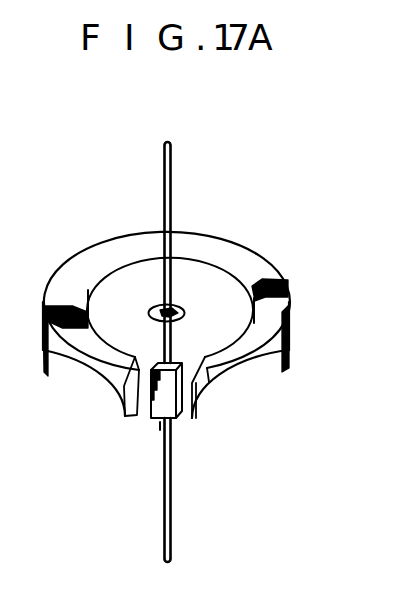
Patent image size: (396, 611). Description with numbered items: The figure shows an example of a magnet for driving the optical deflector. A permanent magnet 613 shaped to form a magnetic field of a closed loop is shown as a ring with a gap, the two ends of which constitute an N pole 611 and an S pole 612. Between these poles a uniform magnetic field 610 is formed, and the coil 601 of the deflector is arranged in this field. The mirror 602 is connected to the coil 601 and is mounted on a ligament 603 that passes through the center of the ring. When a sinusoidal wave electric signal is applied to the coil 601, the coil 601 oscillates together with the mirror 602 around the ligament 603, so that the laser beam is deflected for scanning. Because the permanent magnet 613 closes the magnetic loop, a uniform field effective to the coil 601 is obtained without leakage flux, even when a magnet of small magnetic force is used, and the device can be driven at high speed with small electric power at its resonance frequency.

The coil 601 is at (174, 420).
The mirror 602 is at (157, 305).
The ligament 603 is at (172, 173).
The uniform magnetic field 610 is at (160, 424).
The N pole 611 is at (103, 414).
The S pole 612 is at (212, 417).
The permanent magnet 613 is at (250, 251).